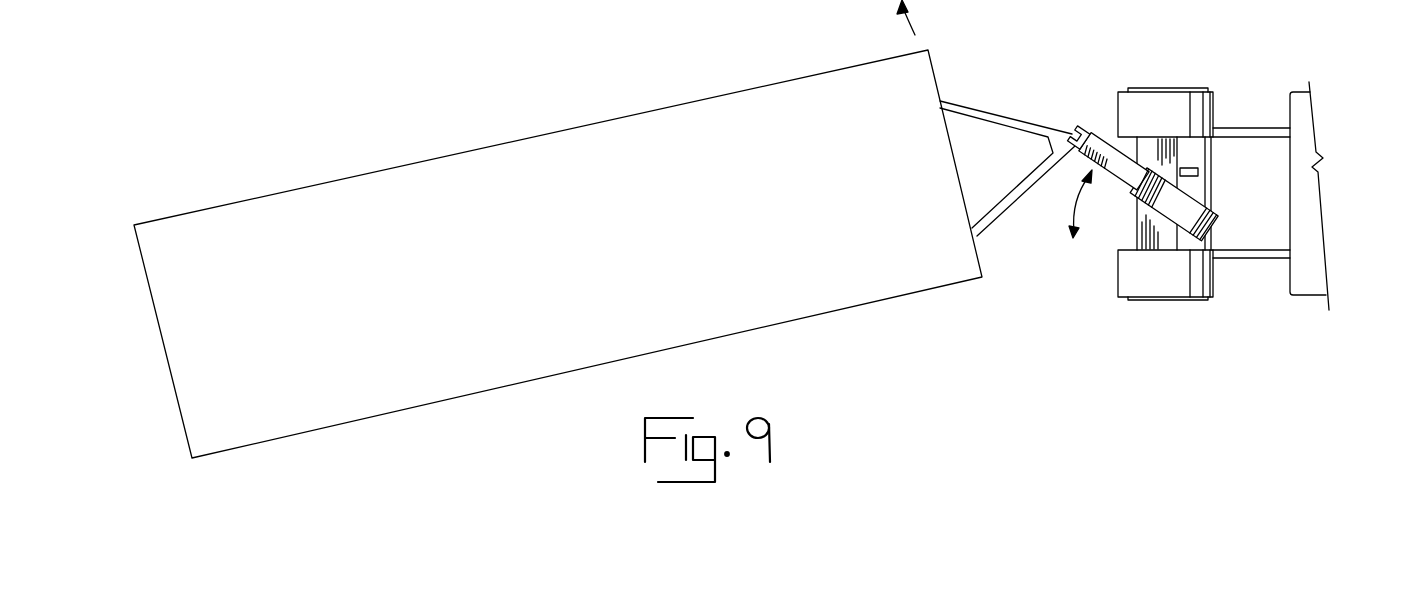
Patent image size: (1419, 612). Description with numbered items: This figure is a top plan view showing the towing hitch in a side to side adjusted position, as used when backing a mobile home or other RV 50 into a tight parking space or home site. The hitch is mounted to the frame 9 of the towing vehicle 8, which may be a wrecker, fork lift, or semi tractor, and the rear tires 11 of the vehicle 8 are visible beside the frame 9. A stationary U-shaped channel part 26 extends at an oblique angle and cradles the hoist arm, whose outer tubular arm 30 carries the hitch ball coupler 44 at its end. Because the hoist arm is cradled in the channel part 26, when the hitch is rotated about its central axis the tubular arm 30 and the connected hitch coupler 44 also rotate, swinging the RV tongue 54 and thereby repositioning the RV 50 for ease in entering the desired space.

The towing vehicle 8 is at (1305, 120).
The frame 9 is at (1150, 216).
The rear tires 11 is at (1165, 105).
The U-shaped channel part 26 is at (1177, 247).
The tubular arm 30 is at (1180, 203).
The hitch ball coupler 44 is at (1085, 130).
The RV 50 is at (815, 107).
The RV tongue 54 is at (1013, 123).